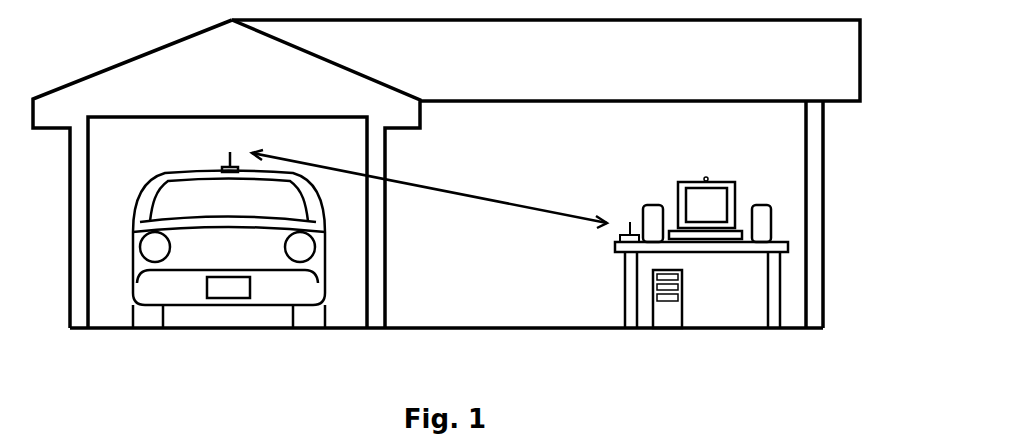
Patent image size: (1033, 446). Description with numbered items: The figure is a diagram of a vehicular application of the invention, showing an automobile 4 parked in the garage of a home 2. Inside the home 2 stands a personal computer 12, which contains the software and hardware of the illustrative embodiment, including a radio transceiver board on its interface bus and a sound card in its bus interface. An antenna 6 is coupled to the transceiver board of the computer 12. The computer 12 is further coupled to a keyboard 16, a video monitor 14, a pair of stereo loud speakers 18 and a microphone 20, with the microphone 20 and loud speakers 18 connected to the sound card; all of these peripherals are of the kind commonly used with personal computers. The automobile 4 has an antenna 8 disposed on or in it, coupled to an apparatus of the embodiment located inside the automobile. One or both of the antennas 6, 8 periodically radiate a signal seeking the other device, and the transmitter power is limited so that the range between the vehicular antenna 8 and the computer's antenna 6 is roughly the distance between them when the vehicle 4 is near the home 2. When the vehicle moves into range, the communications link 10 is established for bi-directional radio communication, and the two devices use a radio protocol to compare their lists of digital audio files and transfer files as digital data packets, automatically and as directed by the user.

The home 2 is at (611, 146).
The automobile 4 is at (118, 167).
The antenna 6 is at (625, 228).
The antenna 8 is at (228, 152).
The communications link 10 is at (457, 192).
The personal computer 12 is at (682, 312).
The video monitor 14 is at (737, 192).
The keyboard 16 is at (747, 252).
The stereo loud speakers 18 is at (657, 205).
The microphone 20 is at (706, 177).